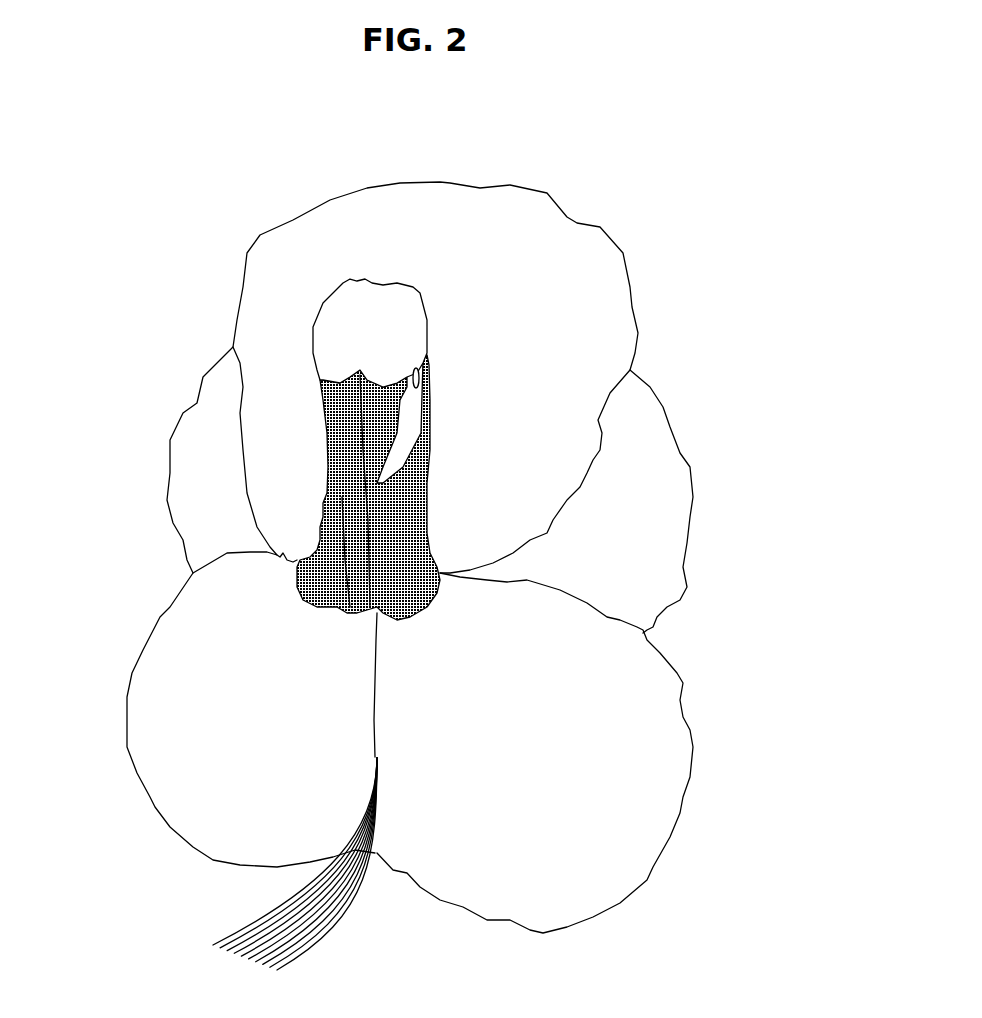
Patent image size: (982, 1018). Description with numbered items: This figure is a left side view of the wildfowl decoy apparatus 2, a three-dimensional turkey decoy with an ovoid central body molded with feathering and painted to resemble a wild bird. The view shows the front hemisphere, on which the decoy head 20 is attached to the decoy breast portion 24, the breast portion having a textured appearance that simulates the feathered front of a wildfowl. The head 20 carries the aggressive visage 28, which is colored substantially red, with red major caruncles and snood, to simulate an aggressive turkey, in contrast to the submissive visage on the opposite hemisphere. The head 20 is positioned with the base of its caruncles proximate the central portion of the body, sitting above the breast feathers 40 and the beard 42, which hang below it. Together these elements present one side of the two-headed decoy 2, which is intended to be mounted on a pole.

The wildfowl decoy apparatus 2 is at (587, 170).
The decoy head 20 is at (355, 357).
The aggressive visage 28 is at (323, 470).
The breast feathers 40 is at (213, 673).
The decoy breast portion 24 is at (650, 738).
The beard 42 is at (280, 913).